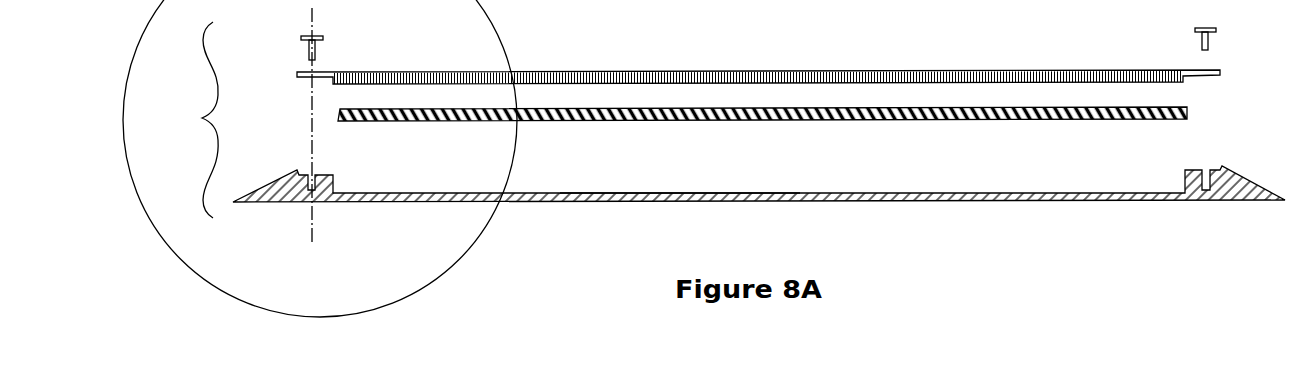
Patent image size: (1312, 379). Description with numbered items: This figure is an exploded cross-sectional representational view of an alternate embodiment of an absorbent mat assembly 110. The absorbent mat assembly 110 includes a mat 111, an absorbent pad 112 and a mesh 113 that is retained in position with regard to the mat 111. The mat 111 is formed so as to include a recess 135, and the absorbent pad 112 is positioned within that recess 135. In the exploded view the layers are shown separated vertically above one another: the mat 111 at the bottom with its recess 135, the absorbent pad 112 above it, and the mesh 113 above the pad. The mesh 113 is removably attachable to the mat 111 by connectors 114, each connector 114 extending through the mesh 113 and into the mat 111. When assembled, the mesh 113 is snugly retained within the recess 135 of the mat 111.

The absorbent mat assembly 110 is at (180, 120).
The mat 111 is at (536, 201).
The absorbent pad 112 is at (470, 121).
The mesh 113 is at (630, 72).
The connector 114 is at (324, 38).
The recess 135 is at (691, 186).